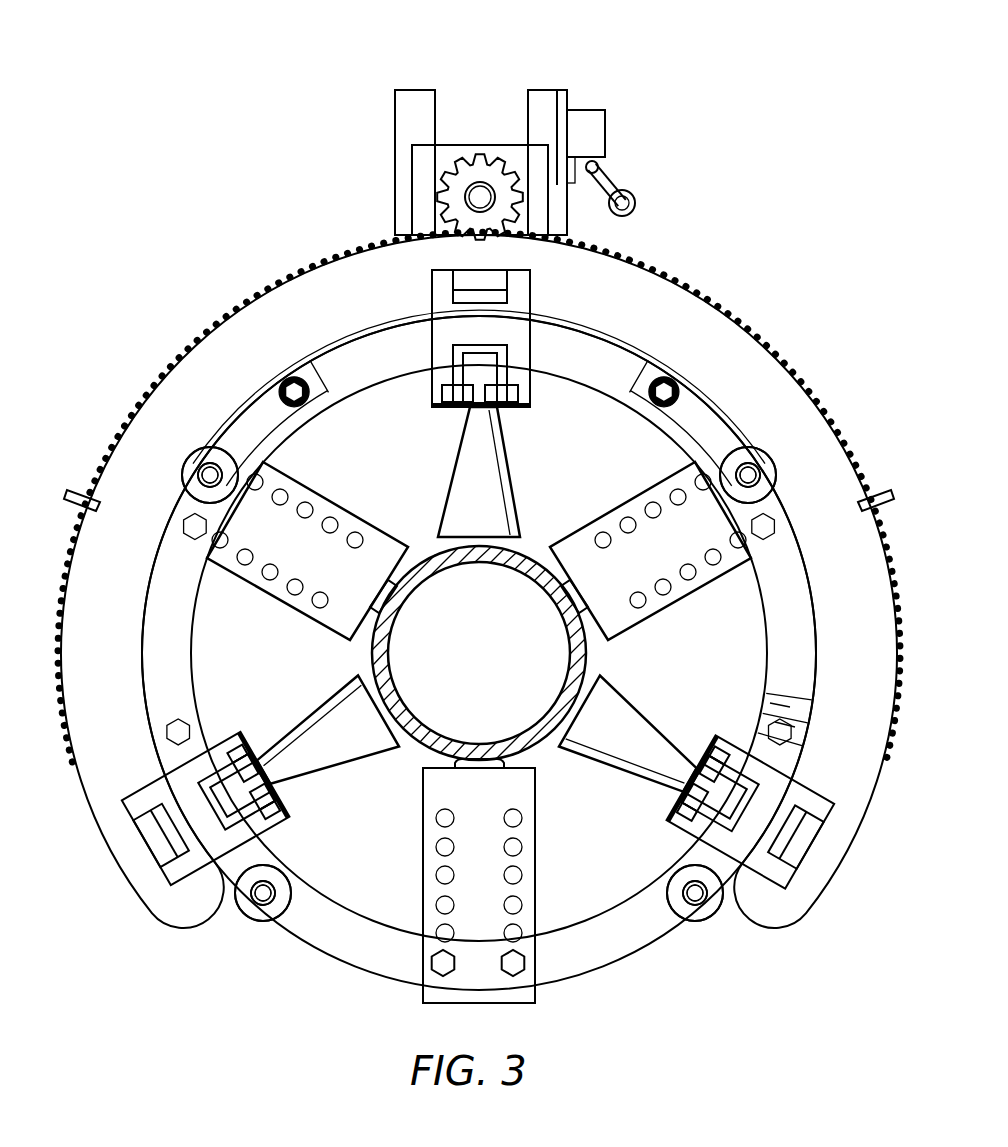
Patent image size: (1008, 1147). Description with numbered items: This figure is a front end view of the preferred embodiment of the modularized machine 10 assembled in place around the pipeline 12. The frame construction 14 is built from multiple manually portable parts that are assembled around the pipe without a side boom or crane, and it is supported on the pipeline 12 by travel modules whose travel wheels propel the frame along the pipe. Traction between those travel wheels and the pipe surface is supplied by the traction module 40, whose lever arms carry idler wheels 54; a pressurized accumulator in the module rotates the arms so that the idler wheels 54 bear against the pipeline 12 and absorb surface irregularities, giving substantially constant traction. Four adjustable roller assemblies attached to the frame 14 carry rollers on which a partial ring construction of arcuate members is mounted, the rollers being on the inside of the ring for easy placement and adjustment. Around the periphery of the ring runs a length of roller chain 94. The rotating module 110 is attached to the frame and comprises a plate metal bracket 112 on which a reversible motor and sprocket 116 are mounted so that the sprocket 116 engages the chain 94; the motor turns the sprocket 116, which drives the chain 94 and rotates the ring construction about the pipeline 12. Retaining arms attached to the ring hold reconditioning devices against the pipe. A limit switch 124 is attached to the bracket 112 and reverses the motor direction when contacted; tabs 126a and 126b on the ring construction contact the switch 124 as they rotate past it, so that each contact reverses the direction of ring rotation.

The modularized machine 10 is at (286, 996).
The pipeline 12 is at (588, 655).
The frame construction 14 is at (372, 965).
The traction module 40 is at (537, 805).
The idler wheel 54 is at (480, 770).
The chain 94 is at (640, 258).
The rotating module 110 is at (562, 86).
The bracket 112 is at (396, 128).
The sprocket 116 is at (476, 168).
The switch 124 is at (600, 172).
The tab 126a is at (80, 488).
The tab 126b is at (878, 488).